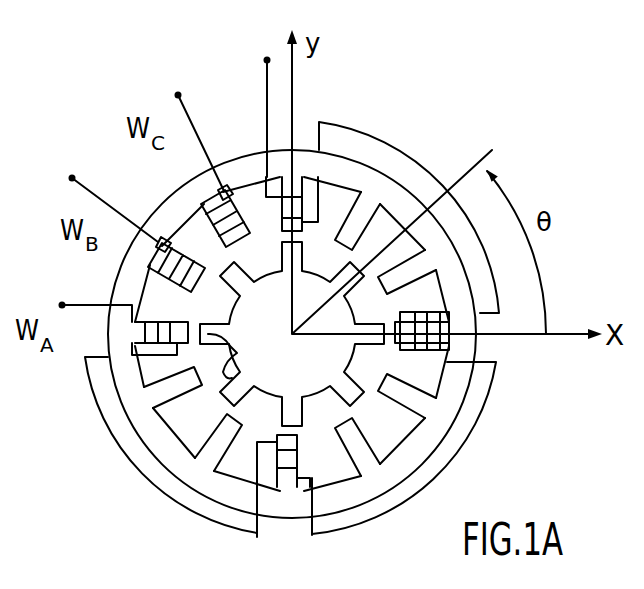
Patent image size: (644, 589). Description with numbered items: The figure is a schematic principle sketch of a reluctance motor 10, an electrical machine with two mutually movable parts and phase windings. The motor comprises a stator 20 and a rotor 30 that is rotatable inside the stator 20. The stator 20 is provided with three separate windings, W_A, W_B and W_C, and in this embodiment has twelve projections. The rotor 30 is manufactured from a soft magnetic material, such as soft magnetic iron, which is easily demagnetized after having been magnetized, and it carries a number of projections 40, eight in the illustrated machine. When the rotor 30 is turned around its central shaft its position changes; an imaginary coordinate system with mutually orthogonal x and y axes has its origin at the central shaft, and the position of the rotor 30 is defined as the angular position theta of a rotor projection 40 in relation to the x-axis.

The reluctance motor 10 is at (465, 459).
The stator 20 is at (294, 526).
The rotor 30 is at (277, 318).
The projections 40 is at (237, 353).